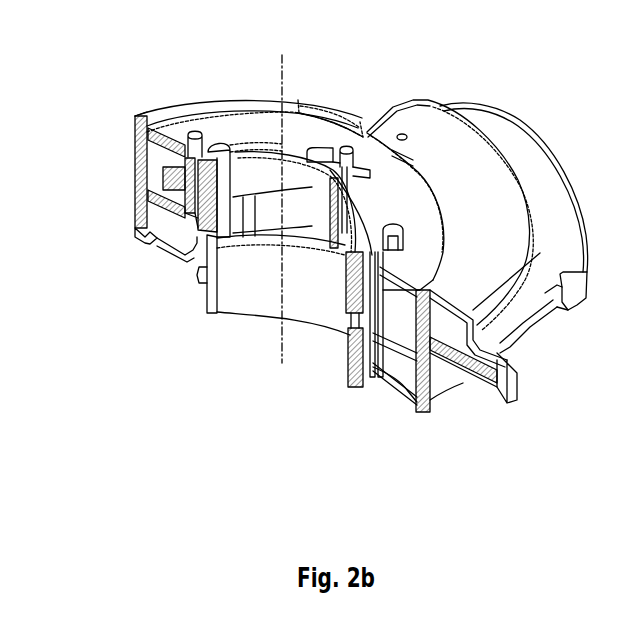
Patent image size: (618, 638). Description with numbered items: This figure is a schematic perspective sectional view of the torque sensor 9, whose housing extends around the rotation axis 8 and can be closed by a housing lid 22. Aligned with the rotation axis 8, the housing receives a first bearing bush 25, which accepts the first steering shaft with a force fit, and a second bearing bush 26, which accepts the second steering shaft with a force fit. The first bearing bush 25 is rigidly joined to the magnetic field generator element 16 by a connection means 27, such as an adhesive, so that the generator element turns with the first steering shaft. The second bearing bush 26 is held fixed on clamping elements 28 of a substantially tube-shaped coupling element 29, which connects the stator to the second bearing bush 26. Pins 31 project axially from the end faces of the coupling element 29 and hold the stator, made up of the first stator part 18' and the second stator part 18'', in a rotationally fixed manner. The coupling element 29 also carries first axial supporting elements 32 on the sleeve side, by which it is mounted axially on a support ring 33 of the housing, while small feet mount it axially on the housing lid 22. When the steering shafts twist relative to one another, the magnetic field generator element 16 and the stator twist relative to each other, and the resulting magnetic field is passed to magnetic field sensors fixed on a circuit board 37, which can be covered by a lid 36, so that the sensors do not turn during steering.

The rotation axis 8 is at (273, 53).
The torque sensor 9 is at (547, 137).
The magnetic field generator element 16 is at (135, 217).
The first stator part 18' is at (229, 144).
The second stator part 18'' is at (106, 235).
The housing lid 22 is at (135, 236).
The first bearing bush 25 is at (217, 133).
The second bearing bush 26 is at (210, 310).
The connection means 27 is at (165, 180).
The clamping elements 28 is at (200, 288).
The coupling element 29 is at (390, 370).
The pins 31 is at (180, 103).
The first axial supporting elements 32 is at (133, 163).
The support ring 33 is at (140, 147).
The lid 36 is at (410, 115).
The circuit board 37 is at (467, 390).